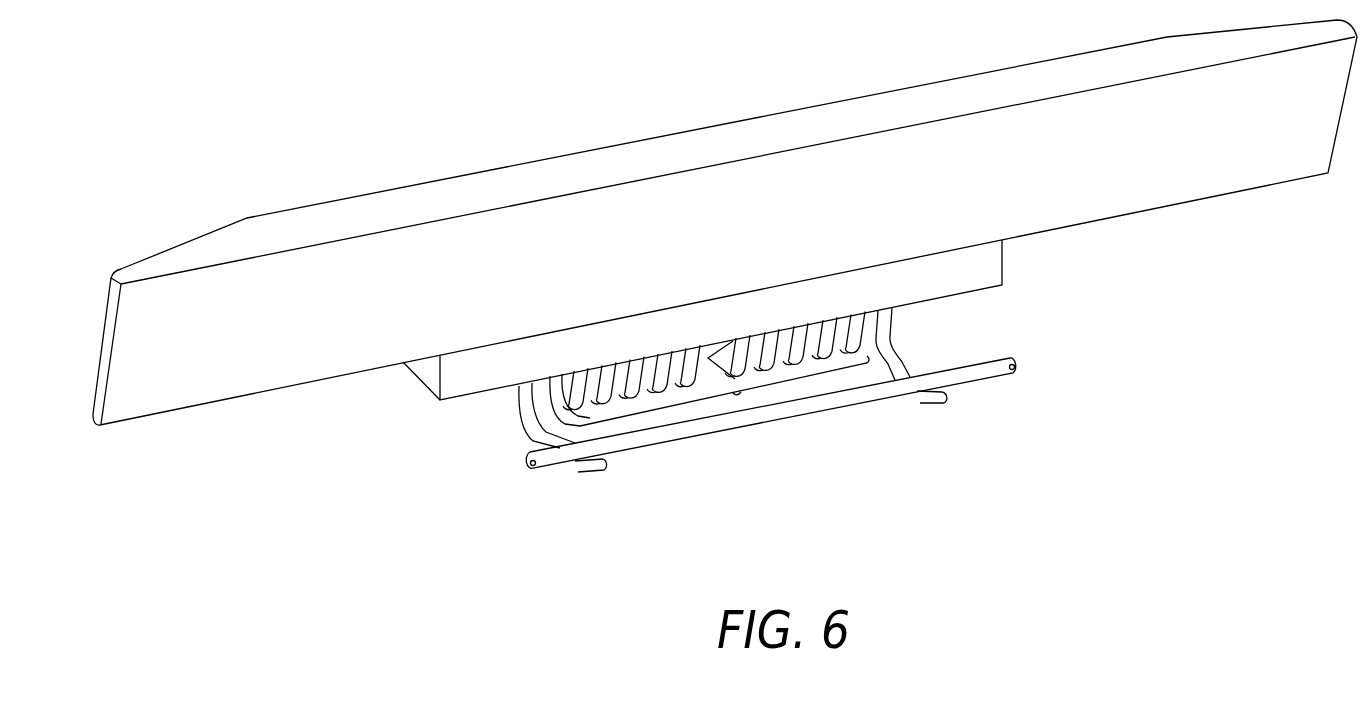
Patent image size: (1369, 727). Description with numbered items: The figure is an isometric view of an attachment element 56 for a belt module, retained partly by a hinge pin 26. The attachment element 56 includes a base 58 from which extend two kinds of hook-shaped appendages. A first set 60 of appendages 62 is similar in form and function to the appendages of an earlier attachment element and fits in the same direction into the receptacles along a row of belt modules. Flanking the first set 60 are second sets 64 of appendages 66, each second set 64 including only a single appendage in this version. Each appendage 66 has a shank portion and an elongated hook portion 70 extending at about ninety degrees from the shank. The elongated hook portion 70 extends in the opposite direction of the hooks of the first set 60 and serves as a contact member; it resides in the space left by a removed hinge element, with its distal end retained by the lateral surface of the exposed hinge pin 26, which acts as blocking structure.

The attachment element 56 is at (790, 233).
The base 58 is at (992, 276).
The appendages 62 is at (857, 344).
The appendages 66 is at (527, 418).
The first set 60 is at (736, 394).
The hinge pin 26 is at (997, 370).
The elongated hook portion 70 is at (572, 467).
The second sets 64 is at (964, 407).